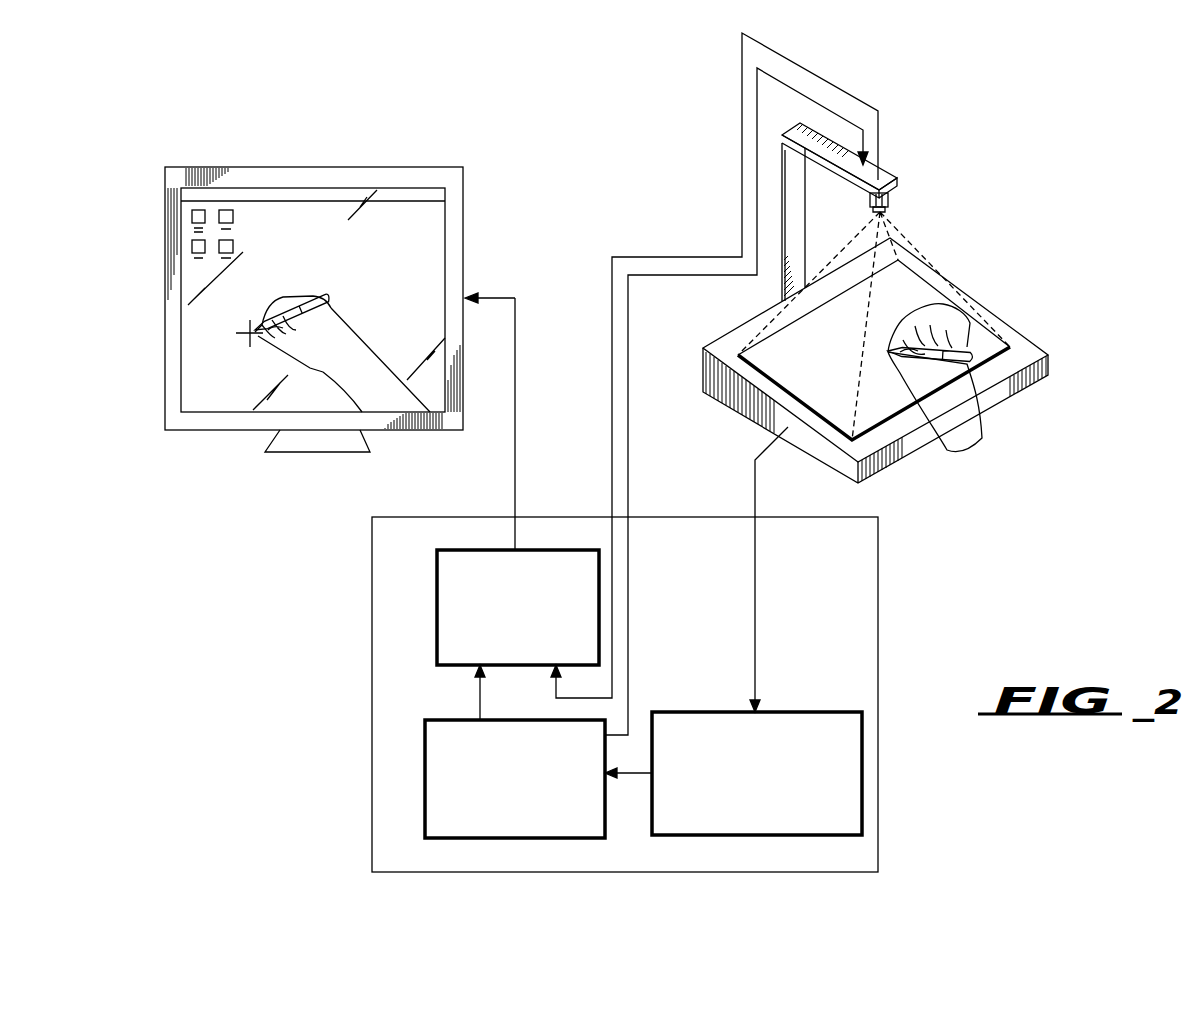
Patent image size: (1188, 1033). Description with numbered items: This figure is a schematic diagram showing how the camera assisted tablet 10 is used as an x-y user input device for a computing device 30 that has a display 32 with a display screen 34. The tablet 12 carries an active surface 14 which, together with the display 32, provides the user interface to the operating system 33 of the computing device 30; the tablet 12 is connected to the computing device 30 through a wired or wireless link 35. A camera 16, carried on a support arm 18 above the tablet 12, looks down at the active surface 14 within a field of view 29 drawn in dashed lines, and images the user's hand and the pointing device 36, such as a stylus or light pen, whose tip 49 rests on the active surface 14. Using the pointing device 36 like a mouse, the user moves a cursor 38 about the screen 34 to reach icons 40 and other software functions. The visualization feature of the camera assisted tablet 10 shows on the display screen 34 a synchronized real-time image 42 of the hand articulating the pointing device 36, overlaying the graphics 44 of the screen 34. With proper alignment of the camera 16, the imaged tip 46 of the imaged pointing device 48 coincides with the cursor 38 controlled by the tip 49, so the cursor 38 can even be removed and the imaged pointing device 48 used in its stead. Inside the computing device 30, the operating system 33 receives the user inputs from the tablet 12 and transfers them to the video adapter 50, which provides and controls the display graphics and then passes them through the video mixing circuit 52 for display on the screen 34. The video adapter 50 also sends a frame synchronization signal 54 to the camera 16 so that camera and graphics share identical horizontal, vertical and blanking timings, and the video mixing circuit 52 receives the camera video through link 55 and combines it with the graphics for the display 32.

The camera assisted tablet 10 is at (1050, 363).
The tablet 12 is at (1015, 337).
The active surface 14 is at (958, 325).
The camera 16 is at (890, 198).
The camera support arm 18 is at (890, 172).
The camera field of view 29 is at (915, 243).
The computing device 30 is at (860, 623).
The display 32 is at (370, 167).
The operating system 33 is at (862, 773).
The display screen 34 is at (418, 228).
The link 35 is at (756, 623).
The pointing device 36 is at (968, 372).
The cursor 38 is at (262, 338).
The icons 40 is at (197, 215).
The real-time image 42 is at (372, 388).
The graphics 44 is at (208, 392).
The imaged tip 46 is at (247, 333).
The imaged pointing device 48 is at (327, 297).
The tip 49 is at (947, 310).
The video adapter 50 is at (425, 778).
The video mixing circuit 52 is at (437, 610).
The frame synchronization signal 54 is at (830, 110).
The link 55 is at (807, 70).